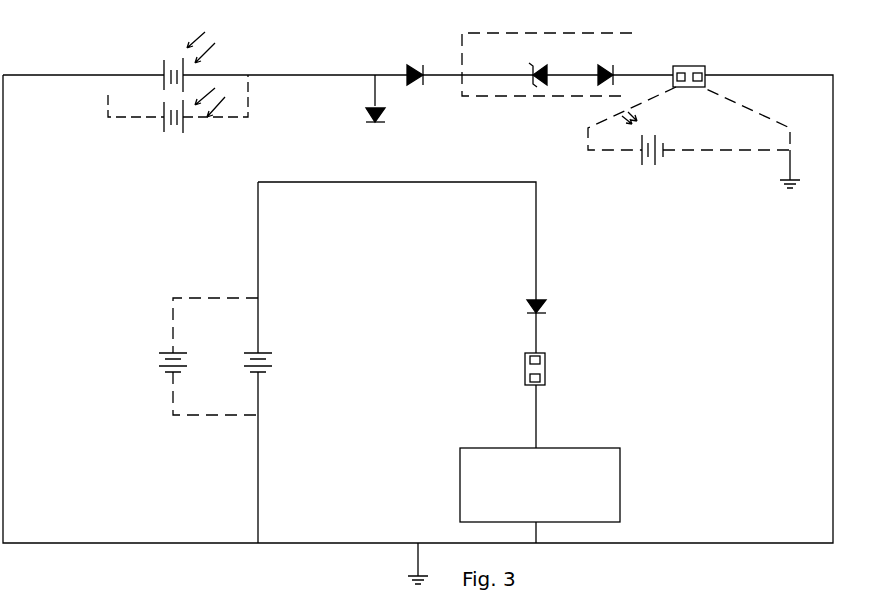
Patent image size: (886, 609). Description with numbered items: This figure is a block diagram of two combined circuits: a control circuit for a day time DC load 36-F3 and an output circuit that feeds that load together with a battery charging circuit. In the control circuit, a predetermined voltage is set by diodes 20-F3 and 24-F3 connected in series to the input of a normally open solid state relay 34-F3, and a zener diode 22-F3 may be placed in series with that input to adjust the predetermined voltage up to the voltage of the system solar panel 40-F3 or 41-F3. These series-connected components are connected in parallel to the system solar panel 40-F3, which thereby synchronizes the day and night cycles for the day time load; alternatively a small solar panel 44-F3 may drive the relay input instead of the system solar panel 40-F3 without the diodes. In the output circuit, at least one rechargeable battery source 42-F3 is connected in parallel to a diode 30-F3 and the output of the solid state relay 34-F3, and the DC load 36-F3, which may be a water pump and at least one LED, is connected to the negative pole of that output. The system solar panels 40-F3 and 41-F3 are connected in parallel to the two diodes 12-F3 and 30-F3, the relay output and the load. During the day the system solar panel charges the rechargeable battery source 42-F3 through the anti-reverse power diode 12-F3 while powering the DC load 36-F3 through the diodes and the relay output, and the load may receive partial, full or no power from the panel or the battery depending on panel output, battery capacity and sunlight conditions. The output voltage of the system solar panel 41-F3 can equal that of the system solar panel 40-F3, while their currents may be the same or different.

The system solar panel 40-F3 is at (135, 62).
The system solar panel 41-F3 is at (141, 110).
The diode 20-F3 is at (407, 65).
The anti-reverse power diode 12-F3 is at (348, 100).
The zener diode 22-F3 is at (547, 64).
The diode 24-F3 is at (608, 65).
The normally open solid state relay 34-F3 is at (648, 206).
The small solar panel 44-F3 is at (694, 137).
The rechargeable battery source 42-F3 is at (239, 356).
The diode 30-F3 is at (562, 308).
The DC load 36-F3 is at (565, 485).